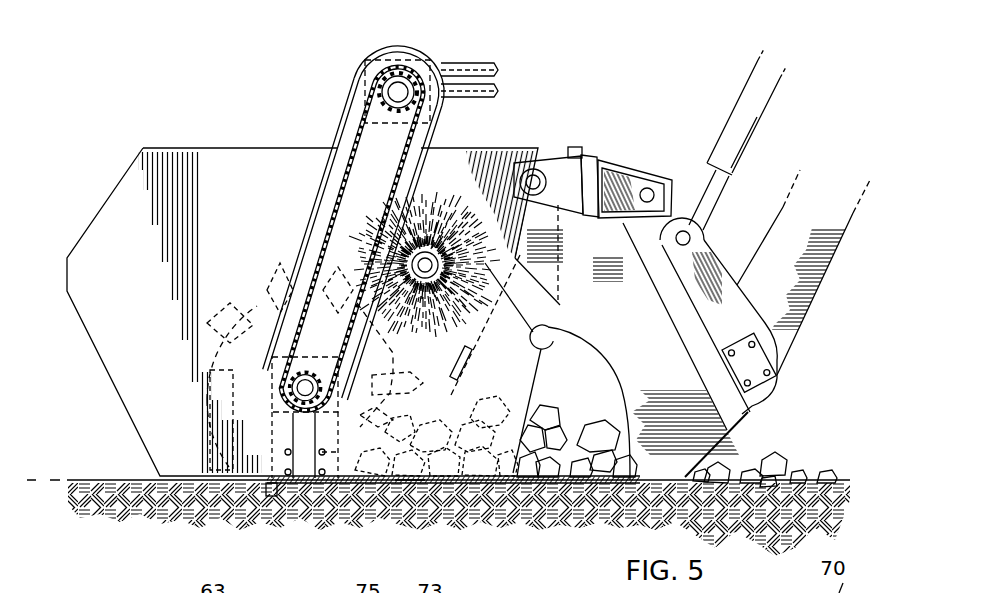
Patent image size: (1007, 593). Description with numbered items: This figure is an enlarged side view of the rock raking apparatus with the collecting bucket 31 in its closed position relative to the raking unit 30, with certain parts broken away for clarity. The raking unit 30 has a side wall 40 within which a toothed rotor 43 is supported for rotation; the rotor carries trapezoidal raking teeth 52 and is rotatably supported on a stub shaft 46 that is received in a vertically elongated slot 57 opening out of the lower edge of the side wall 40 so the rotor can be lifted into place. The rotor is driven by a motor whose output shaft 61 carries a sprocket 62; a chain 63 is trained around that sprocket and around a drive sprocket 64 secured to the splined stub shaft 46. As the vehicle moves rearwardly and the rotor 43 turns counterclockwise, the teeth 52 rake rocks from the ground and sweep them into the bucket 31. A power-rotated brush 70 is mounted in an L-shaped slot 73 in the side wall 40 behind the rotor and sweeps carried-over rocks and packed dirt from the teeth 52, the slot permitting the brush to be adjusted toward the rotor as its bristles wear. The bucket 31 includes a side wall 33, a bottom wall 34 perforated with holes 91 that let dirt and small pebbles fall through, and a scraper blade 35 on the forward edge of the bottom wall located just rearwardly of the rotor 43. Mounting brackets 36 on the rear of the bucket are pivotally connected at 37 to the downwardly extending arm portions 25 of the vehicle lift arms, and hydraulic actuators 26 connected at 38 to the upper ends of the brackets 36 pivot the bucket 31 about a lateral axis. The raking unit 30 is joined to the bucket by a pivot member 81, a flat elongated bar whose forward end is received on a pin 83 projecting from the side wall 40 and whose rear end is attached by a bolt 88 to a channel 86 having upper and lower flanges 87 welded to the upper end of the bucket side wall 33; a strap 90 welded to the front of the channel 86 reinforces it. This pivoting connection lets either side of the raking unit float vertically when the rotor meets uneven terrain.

The downwardly extending arm portion 25 is at (783, 298).
The reciprocating hydraulic actuator 26 is at (743, 117).
The raking unit 30 is at (260, 170).
The collecting bucket 31 is at (688, 420).
The side wall 33 is at (622, 385).
The bottom wall 34 is at (530, 483).
The scraper blade 35 is at (410, 483).
The mounting bracket 36 is at (716, 275).
The pivotal connection 37 is at (755, 365).
The actuator pivot connection 38 is at (697, 297).
The side wall 40 is at (125, 386).
The toothed rotor 43 is at (215, 405).
The stub shaft 46 is at (298, 396).
The raking tooth 52 is at (270, 490).
The slot 57 is at (312, 440).
The output shaft 61 is at (392, 93).
The sprocket 62 is at (398, 72).
The chain 63 is at (330, 224).
The drive sprocket 64 is at (310, 376).
The power-rotated brush 70 is at (452, 196).
The L-shaped slot 73 is at (558, 340).
The pivot member 81 is at (567, 163).
The pin 83 is at (532, 178).
The channel 86 is at (636, 156).
The flange 87 is at (604, 164).
The bolt 88 is at (652, 194).
The strap 90 is at (567, 200).
The hole 91 is at (590, 483).